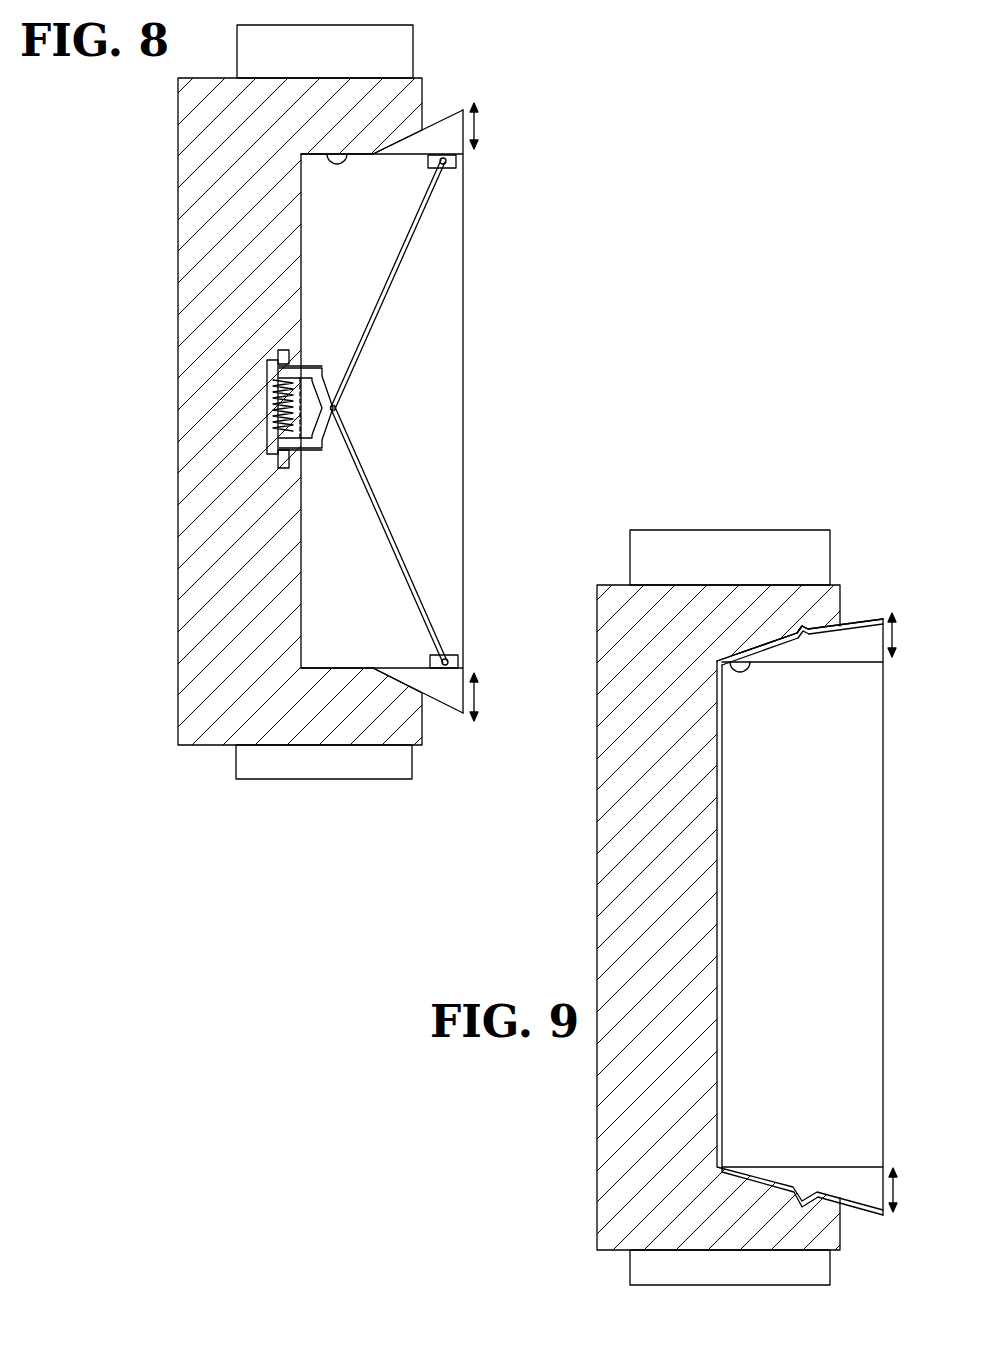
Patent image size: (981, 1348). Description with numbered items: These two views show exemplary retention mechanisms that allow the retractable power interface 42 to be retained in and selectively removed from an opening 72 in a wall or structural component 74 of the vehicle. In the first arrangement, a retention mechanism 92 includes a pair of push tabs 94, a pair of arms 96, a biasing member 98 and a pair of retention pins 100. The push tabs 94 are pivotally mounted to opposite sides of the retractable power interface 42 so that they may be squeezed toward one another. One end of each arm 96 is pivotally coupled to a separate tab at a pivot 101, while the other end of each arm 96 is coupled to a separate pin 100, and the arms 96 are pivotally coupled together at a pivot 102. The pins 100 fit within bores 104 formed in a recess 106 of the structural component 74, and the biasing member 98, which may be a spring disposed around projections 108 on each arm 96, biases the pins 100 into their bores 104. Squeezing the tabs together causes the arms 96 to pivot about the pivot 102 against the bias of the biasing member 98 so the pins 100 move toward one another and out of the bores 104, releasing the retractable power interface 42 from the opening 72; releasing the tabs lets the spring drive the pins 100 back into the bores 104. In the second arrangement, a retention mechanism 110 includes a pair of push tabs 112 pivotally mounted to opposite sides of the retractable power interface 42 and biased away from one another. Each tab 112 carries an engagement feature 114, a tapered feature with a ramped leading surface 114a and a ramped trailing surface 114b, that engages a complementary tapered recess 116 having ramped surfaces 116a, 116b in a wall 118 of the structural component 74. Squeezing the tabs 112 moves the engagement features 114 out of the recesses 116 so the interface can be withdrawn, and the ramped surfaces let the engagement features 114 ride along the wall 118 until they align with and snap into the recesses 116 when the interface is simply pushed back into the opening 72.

In FIG. 8, the retractable power interface 42 is at (536, 185).
In FIG. 9, the retractable power interface 42 is at (914, 613).
In FIG. 8, the opening 72 is at (329, 152).
In FIG. 9, the opening 72 is at (725, 657).
In FIG. 8, the structural component 74 is at (186, 705).
In FIG. 9, the structural component 74 is at (607, 1208).
In FIG. 8, the retention mechanism 92 is at (494, 375).
In FIG. 8, the push tabs 94 is at (440, 133).
In FIG. 8, the arms 96 is at (383, 298).
In FIG. 8, the biasing member 98 is at (298, 403).
In FIG. 8, the retention pins 100 is at (306, 367).
In FIG. 8, the pivot 101 is at (446, 168).
In FIG. 8, the pivot 102 is at (337, 409).
In FIG. 8, the bores 104 is at (286, 350).
In FIG. 8, the recess 106 is at (271, 443).
In FIG. 8, the projections 108 is at (275, 395).
In FIG. 9, the retention mechanism 110 is at (857, 612).
In FIG. 9, the push tabs 112 is at (856, 652).
In FIG. 9, the engagement feature 114 is at (803, 641).
In FIG. 9, the ramped leading surface 114a is at (799, 637).
In FIG. 9, the ramped trailing surface 114b is at (804, 637).
In FIG. 9, the recess 116 is at (801, 626).
In FIG. 9, the ramped surface 116a is at (798, 630).
In FIG. 9, the ramped surface 116b is at (808, 627).
In FIG. 9, the wall 118 is at (775, 641).